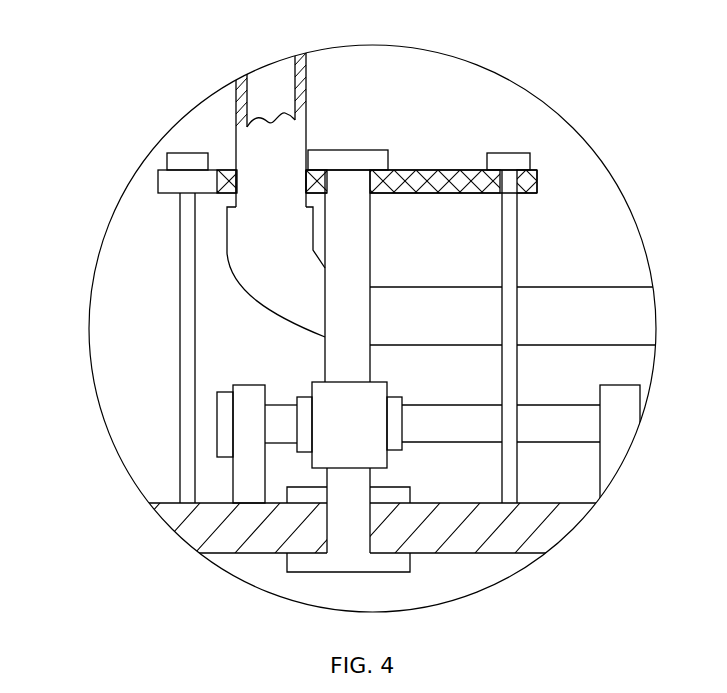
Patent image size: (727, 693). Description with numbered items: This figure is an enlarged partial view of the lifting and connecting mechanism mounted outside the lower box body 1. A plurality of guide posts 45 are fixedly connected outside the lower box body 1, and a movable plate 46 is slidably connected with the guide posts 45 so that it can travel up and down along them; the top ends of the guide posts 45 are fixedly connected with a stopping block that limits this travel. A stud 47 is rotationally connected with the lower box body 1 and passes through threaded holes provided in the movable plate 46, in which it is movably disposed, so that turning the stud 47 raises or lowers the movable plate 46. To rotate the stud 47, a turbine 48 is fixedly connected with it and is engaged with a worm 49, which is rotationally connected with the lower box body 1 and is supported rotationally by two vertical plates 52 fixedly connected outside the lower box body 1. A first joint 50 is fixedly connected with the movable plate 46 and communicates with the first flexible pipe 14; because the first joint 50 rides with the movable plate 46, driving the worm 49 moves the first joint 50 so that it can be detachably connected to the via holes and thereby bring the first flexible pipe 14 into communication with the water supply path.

The lower box body 1 is at (213, 531).
The first flexible pipe 14 is at (587, 287).
The guide posts 45 is at (188, 340).
The movable plate 46 is at (443, 168).
The stud 47 is at (357, 237).
The turbine 48 is at (360, 435).
The worm 49 is at (557, 422).
The first joint 50 is at (260, 153).
The vertical plates 52 is at (247, 420).